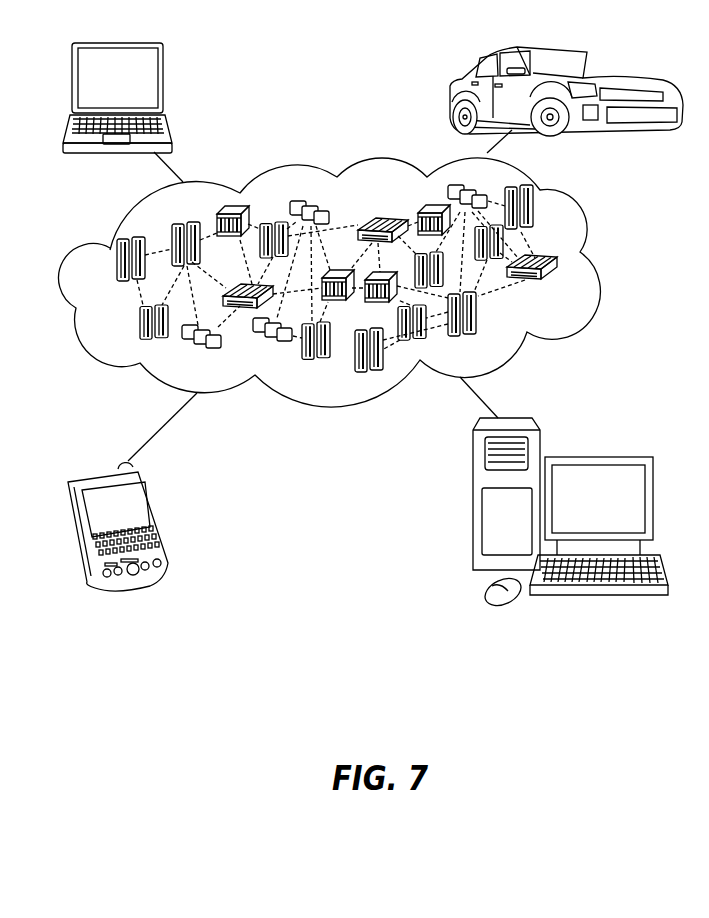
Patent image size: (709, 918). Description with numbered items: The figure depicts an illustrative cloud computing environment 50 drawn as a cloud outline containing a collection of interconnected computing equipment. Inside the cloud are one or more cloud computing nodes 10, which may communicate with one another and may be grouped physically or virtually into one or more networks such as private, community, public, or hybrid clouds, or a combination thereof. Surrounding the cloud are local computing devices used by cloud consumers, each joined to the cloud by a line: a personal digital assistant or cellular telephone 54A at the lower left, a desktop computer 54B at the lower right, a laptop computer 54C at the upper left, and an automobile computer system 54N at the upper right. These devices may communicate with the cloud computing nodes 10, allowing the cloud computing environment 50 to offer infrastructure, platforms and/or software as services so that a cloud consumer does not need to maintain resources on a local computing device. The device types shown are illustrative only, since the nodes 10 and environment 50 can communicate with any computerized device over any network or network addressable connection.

The cloud computing environment 50 is at (600, 266).
The cloud computing nodes 10 is at (566, 291).
The personal digital assistant (PDA) or cellular telephone 54A is at (157, 517).
The desktop computer 54B is at (597, 456).
The laptop computer 54C is at (165, 84).
The automobile computer system 54N is at (455, 94).